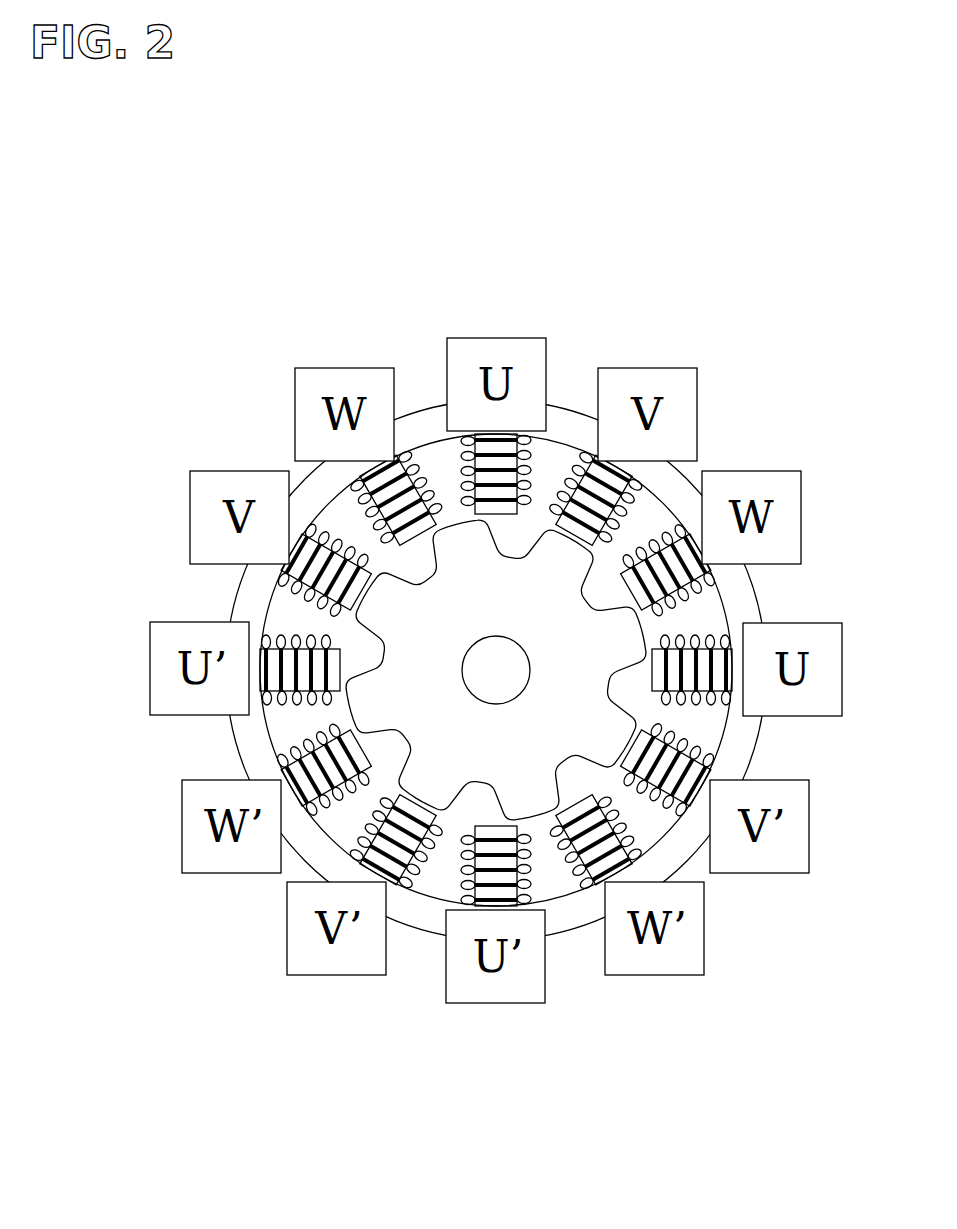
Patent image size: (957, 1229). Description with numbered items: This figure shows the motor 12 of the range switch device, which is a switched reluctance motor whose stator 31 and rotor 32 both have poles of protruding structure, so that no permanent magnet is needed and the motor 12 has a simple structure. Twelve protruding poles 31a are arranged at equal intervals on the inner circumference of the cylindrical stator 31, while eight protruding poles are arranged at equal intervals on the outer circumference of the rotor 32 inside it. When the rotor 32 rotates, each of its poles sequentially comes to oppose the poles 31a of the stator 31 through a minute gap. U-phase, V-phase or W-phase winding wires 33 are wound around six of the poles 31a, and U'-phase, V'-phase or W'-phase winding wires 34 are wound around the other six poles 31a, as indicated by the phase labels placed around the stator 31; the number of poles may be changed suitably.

The motor 12 is at (496, 605).
The stator 31 is at (496, 597).
The protruding pole 31a is at (496, 641).
The rotor 32 is at (603, 610).
The winding wire 33 is at (496, 659).
The winding wire 34 is at (551, 952).